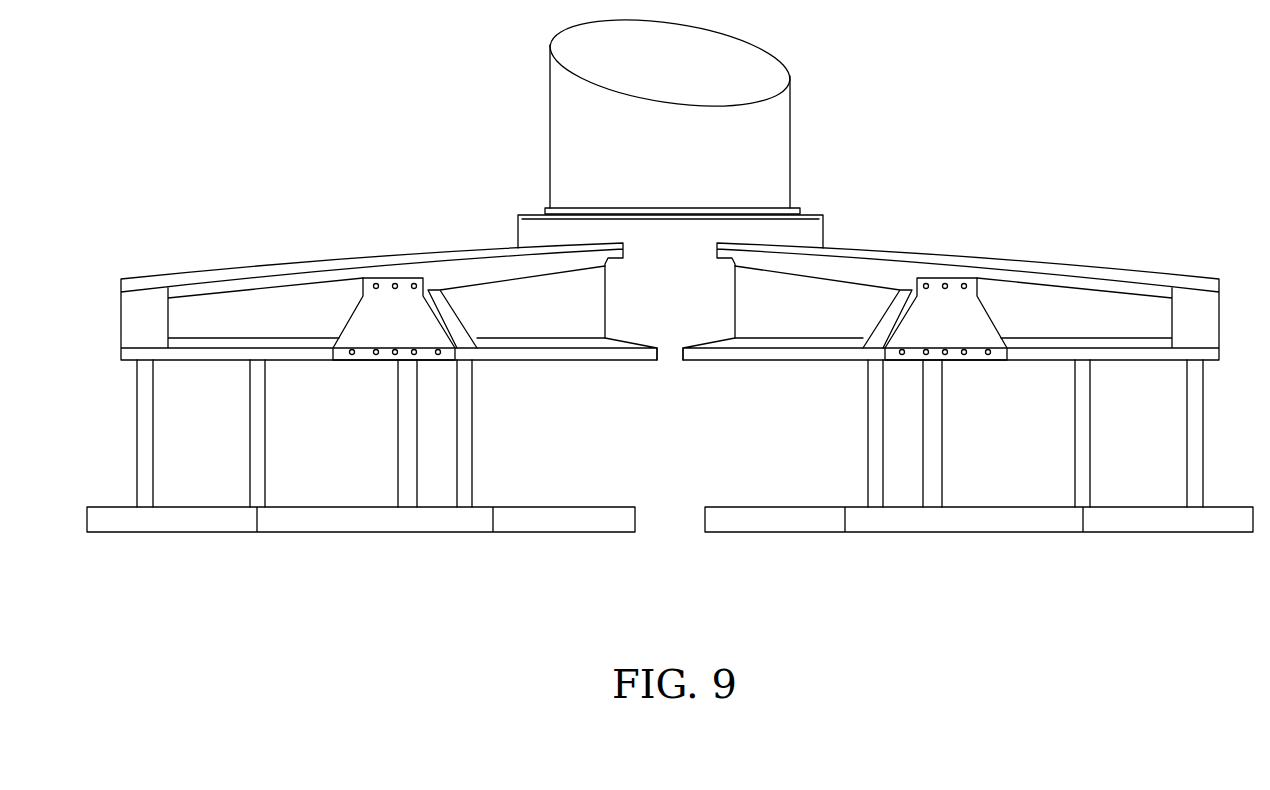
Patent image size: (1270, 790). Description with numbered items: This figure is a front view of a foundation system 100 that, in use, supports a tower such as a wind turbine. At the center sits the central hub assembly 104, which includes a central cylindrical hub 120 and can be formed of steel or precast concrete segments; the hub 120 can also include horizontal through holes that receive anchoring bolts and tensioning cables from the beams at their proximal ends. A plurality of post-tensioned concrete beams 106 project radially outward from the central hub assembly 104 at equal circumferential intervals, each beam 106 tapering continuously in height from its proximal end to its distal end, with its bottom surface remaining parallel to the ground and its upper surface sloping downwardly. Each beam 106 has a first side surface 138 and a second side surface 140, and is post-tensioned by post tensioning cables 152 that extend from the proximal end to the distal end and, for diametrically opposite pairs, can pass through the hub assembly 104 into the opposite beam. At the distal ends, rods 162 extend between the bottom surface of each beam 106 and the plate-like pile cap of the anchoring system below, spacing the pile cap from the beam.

The foundation system 100 is at (957, 106).
The central hub assembly 104 is at (518, 214).
The beam 106 is at (283, 263).
The central cylindrical hub 120 is at (667, 307).
The first side surface 138 is at (826, 312).
The second side surface 140 is at (514, 312).
The post tensioning cable 152 is at (947, 286).
The rod 162 is at (137, 437).